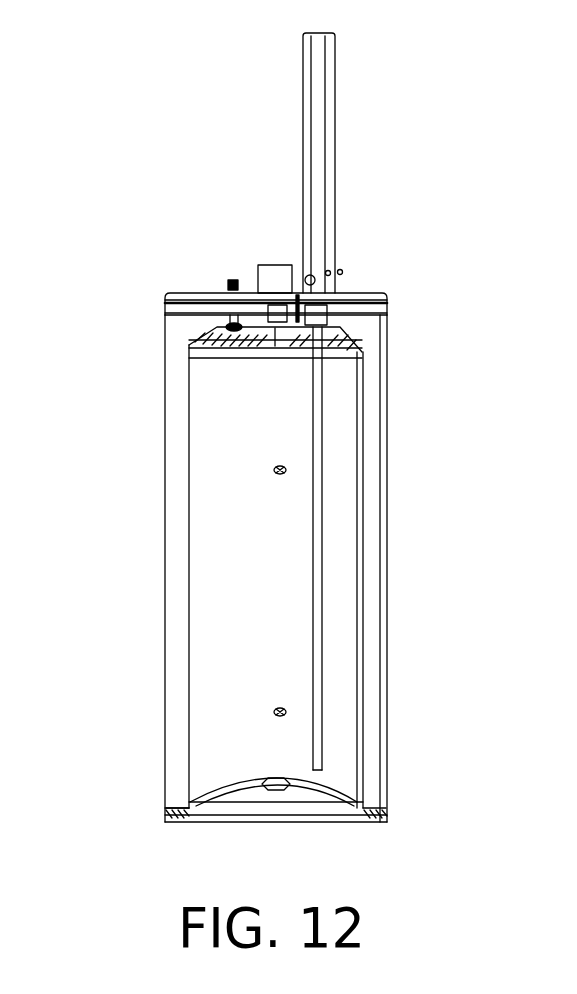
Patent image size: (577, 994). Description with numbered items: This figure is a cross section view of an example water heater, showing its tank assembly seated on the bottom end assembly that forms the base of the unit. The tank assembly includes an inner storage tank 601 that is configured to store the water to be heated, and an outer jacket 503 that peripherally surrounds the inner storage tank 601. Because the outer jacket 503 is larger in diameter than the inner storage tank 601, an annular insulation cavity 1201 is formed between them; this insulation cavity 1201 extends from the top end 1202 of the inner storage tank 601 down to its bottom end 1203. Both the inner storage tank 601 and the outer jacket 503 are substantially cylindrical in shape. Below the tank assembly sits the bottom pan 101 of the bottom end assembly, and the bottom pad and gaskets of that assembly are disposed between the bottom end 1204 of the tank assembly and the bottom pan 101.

The bottom pan 101 is at (380, 820).
The outer jacket 503 is at (382, 492).
The inner storage tank 601 is at (363, 735).
The insulation cavity 1201 is at (178, 632).
The top end 1202 is at (198, 331).
The bottom end 1203 is at (372, 787).
The bottom end 1204 is at (160, 781).